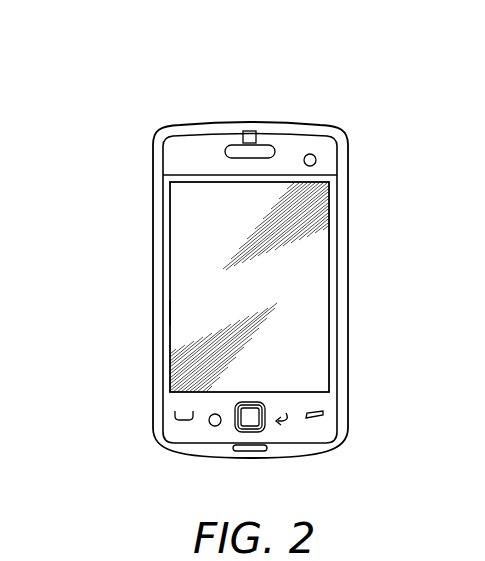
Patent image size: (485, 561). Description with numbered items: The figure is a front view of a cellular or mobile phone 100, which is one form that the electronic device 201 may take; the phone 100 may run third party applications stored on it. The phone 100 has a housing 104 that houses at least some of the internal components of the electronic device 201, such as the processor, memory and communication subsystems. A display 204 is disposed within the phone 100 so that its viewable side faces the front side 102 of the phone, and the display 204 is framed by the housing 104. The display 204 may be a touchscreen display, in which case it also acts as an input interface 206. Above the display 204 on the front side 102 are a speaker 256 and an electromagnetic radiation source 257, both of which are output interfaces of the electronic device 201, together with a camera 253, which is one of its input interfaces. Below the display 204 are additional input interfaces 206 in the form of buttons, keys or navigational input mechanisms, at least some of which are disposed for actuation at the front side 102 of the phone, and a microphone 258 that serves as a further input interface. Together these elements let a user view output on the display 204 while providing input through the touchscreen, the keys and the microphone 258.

The phone 100 is at (145, 124).
The electronic device 201 is at (187, 94).
The housing 104 is at (348, 190).
The display 204 is at (170, 236).
The input interface 206 is at (170, 311).
The front side 102 is at (170, 403).
The camera 253 is at (250, 130).
The speaker 256 is at (270, 144).
The electromagnetic radiation source 257 is at (316, 160).
The microphone 258 is at (249, 452).